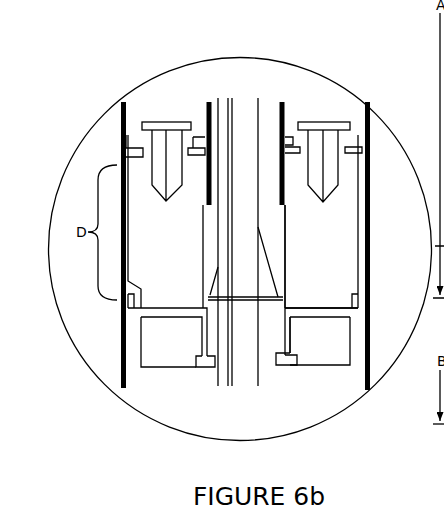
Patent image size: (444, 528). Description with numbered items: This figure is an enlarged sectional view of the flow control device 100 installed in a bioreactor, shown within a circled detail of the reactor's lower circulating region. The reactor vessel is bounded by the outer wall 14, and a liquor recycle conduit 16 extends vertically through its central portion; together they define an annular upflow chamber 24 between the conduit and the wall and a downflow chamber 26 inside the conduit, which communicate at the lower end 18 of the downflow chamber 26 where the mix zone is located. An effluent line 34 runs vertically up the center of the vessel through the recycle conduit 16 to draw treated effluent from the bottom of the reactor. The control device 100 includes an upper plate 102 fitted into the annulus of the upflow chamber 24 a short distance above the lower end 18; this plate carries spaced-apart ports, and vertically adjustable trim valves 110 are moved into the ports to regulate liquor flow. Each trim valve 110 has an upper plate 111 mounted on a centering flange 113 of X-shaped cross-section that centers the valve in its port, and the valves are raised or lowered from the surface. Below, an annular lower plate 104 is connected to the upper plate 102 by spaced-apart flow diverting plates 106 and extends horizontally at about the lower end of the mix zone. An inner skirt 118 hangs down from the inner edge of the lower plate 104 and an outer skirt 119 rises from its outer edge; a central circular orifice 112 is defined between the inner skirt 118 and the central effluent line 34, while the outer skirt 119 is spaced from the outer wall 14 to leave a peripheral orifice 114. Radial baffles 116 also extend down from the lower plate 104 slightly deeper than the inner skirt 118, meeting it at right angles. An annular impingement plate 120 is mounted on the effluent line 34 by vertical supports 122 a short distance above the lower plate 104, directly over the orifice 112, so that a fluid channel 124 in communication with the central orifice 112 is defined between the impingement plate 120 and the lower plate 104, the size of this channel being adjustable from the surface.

The outer wall 14 is at (81, 210).
The liquor recycle conduit 16 is at (163, 115).
The lower end of downflow chamber 18 is at (340, 160).
The upflow chamber 24 is at (352, 115).
The downflow chamber 26 is at (307, 206).
The effluent line 34 is at (261, 275).
The flow control device 100 is at (240, 238).
The upper plate 102 is at (406, 234).
The lower plate 104 is at (249, 299).
The flow diverting plates 106 is at (354, 256).
The trim valve 110 is at (353, 102).
The upper plate of trim valve 111 is at (145, 90).
The central circular orifice 112 is at (342, 309).
The centering flange 113 is at (107, 165).
The peripheral orifice 114 is at (121, 265).
The radial baffles 116 is at (245, 375).
The inner skirt 118 is at (200, 364).
The outer skirt 119 is at (394, 216).
The impingement plate 120 is at (288, 265).
The vertical supports 122 is at (308, 234).
The fluid channel 124 is at (347, 274).